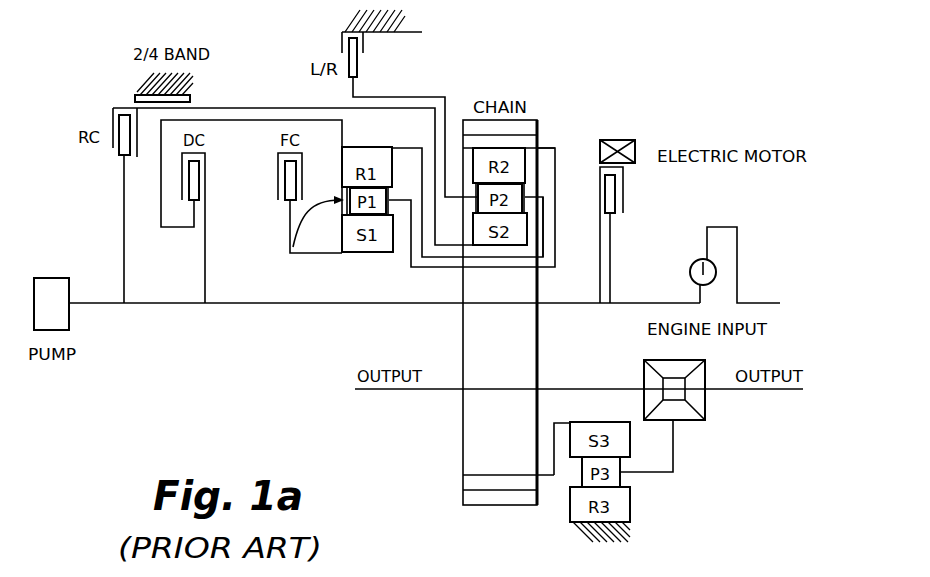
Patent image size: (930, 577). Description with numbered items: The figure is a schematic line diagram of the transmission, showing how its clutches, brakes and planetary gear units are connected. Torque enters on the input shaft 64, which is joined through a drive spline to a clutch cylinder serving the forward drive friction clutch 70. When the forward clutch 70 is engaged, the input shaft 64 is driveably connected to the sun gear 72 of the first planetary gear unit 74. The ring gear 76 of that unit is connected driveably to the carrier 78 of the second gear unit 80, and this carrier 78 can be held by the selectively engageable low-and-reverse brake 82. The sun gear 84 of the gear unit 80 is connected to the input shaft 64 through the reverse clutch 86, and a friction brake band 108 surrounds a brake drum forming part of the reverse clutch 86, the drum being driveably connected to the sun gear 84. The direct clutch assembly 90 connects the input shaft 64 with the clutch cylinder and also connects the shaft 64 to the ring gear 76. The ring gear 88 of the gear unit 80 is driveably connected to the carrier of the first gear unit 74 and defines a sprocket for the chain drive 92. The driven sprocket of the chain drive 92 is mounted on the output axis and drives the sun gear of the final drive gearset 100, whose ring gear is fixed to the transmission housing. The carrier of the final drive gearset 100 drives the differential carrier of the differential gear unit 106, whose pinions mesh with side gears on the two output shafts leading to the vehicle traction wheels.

The friction brake band 108 is at (135, 96).
The reverse clutch 86 is at (113, 148).
The direct clutch assembly 90 is at (199, 176).
The forward drive friction clutch 70 is at (278, 183).
The first planetary gear unit 74 is at (291, 250).
The ring gear 76 is at (384, 148).
The sun gear 72 is at (350, 253).
The low-and-reverse brake 82 is at (358, 70).
The chain drive 92 is at (540, 127).
The ring gear 88 is at (480, 165).
The carrier 78 is at (523, 190).
The sun gear 84 is at (515, 247).
The gear unit 80 is at (538, 229).
The input shaft 64 is at (437, 303).
The differential gear unit 106 is at (700, 403).
The final drive gearset 100 is at (647, 473).